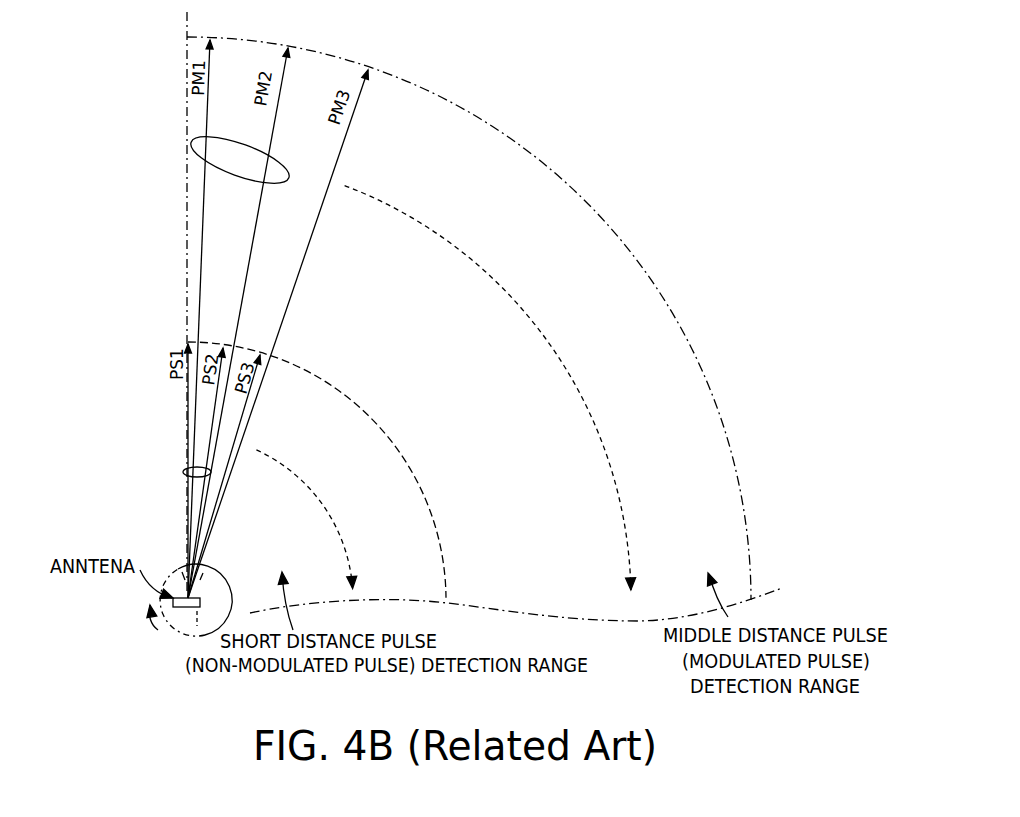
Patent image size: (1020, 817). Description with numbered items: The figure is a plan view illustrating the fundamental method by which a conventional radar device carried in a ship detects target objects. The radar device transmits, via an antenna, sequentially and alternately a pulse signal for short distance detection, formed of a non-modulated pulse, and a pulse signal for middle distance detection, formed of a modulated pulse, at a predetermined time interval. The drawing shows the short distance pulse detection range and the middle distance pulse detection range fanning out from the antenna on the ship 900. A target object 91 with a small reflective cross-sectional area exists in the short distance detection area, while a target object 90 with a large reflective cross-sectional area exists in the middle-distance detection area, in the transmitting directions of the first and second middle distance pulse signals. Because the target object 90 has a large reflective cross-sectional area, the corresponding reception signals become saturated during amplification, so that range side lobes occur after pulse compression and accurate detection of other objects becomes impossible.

The target object 90 is at (190, 137).
The target object 91 is at (181, 468).
The ship 900 is at (174, 627).